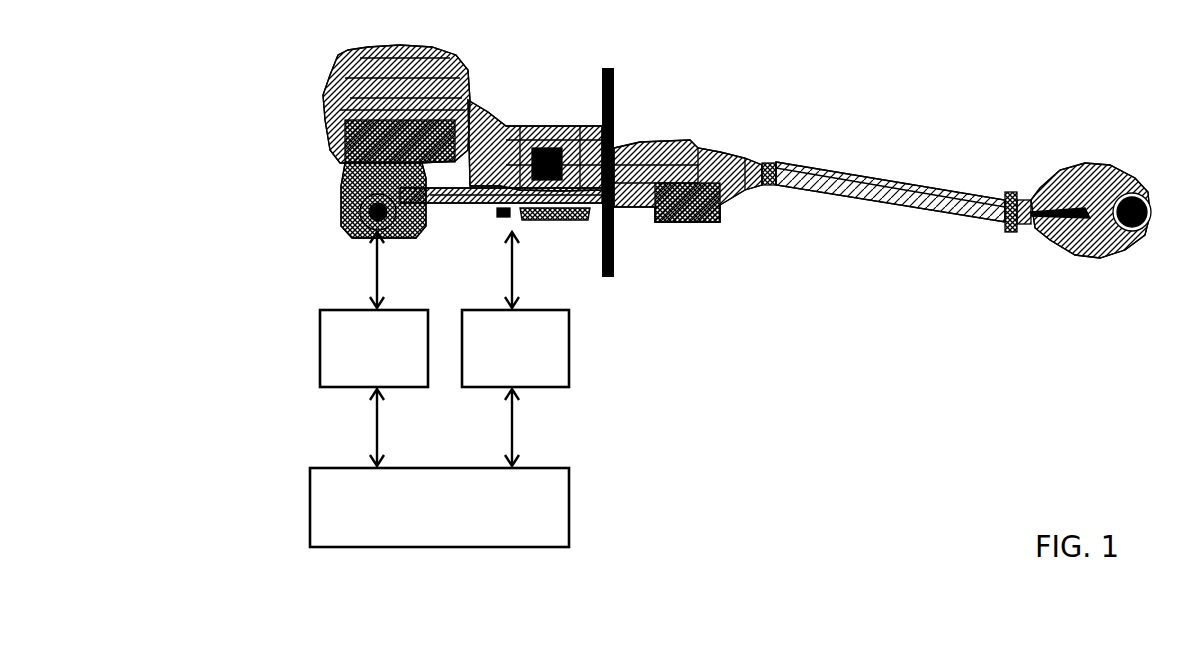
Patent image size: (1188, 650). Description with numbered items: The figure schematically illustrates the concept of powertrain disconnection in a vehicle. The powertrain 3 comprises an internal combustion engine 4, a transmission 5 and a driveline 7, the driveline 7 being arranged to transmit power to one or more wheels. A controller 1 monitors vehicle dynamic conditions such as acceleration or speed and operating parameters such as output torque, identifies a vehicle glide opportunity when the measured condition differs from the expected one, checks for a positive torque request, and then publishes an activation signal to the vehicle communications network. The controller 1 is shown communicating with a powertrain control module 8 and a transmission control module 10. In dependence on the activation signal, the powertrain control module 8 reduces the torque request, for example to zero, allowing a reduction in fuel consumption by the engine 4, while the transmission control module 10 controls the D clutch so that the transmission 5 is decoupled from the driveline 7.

The controller 1 is at (434, 530).
The powertrain 3 is at (952, 125).
The internal combustion engine 4 is at (330, 97).
The transmission 5 is at (580, 137).
The driveline 7 is at (937, 208).
The powertrain control module 8 is at (368, 367).
The transmission control module 10 is at (503, 367).